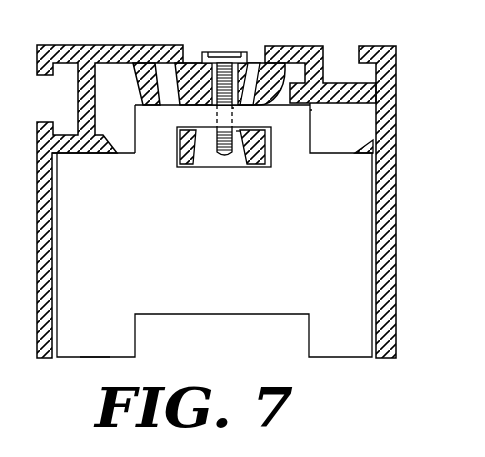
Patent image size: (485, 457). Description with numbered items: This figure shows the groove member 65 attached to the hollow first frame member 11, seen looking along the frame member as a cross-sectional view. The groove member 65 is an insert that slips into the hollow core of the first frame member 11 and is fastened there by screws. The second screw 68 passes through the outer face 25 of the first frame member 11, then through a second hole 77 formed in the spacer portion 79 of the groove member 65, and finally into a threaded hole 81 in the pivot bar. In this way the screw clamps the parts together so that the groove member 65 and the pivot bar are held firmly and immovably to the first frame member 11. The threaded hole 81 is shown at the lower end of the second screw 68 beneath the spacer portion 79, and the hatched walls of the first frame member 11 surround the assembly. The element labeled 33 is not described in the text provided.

The first frame member 11 is at (397, 202).
The outer face 25 is at (290, 46).
The second screw 68 is at (235, 51).
The nut 33 is at (183, 153).
The threaded hole 81 is at (238, 143).
The second hole 77 is at (233, 121).
The spacer portion 79 is at (309, 119).
The groove member 65 is at (92, 357).